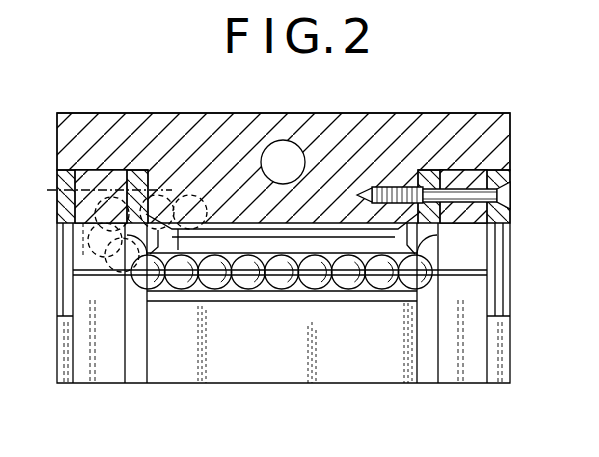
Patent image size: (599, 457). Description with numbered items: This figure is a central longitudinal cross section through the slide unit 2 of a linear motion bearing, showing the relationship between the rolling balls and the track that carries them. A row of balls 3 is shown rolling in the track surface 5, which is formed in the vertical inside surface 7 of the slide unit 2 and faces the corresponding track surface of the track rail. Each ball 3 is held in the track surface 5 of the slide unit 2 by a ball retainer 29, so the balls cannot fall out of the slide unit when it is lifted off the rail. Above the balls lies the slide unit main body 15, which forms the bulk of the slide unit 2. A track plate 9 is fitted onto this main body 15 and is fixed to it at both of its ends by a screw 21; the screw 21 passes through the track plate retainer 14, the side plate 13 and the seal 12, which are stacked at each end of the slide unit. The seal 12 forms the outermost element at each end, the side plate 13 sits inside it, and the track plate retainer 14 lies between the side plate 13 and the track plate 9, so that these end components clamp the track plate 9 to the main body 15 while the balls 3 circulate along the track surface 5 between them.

The slide unit 2 is at (289, 110).
The ball 3 is at (200, 292).
The track surface 5 is at (333, 292).
The vertical inside surface 7 is at (370, 296).
The track plate 9 is at (234, 237).
The seal 12 is at (62, 347).
The side plate 13 is at (90, 378).
The track plate retainer 14 is at (137, 375).
The slide unit main body 15 is at (428, 130).
The screw 21 is at (508, 197).
The ball retainer 29 is at (283, 278).